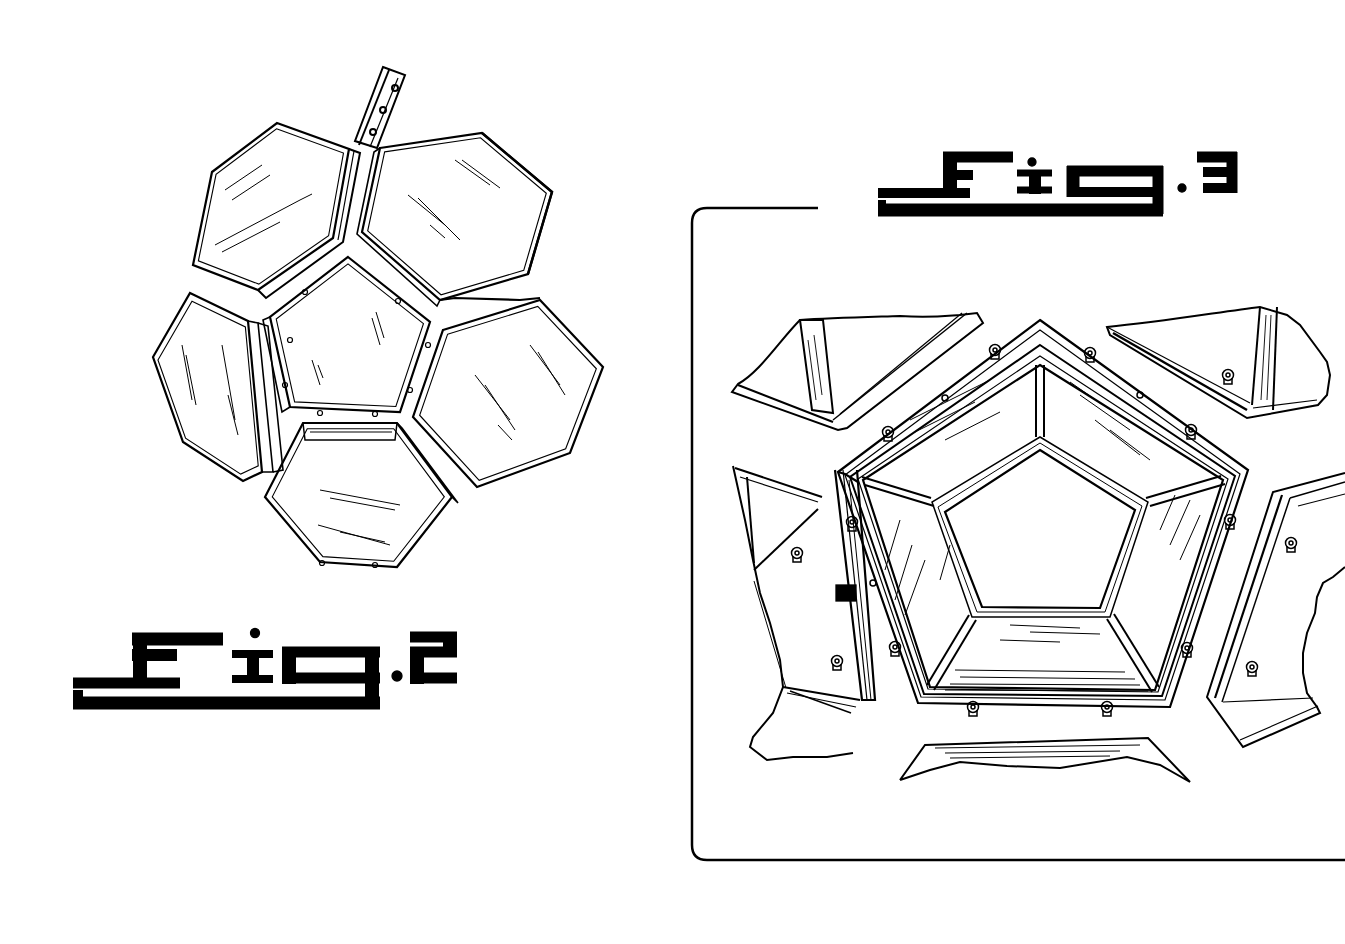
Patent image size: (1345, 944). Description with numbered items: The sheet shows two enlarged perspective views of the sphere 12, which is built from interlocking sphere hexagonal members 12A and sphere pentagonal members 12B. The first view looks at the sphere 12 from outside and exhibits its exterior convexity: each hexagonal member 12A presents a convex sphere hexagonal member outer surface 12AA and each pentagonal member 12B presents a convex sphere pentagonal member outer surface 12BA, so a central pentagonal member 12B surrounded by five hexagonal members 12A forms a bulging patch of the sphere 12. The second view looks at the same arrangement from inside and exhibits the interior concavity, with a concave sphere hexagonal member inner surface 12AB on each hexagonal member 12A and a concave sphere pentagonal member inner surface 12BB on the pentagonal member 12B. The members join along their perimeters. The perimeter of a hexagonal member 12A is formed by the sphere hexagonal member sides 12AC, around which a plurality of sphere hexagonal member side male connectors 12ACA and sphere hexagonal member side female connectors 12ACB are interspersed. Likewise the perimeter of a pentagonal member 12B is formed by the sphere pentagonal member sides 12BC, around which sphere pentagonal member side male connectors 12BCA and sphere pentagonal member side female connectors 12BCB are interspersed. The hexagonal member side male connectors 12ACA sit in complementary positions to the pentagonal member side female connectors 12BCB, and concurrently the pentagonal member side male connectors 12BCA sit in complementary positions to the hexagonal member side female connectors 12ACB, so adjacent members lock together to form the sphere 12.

In FIG. 2, the sphere 12 is at (248, 104).
In FIG. 3, the sphere 12 is at (1057, 287).
In FIG. 2, the sphere hexagonal member 12A is at (497, 140).
In FIG. 3, the sphere hexagonal member 12A is at (747, 582).
In FIG. 2, the sphere hexagonal member outer surface 12AA is at (490, 206).
In FIG. 3, the sphere hexagonal member outer surface 12AA is at (754, 468).
In FIG. 3, the sphere hexagonal member inner surface 12AB is at (800, 660).
In FIG. 2, the sphere hexagonal member sides 12AC is at (543, 175).
In FIG. 3, the sphere hexagonal member sides 12AC is at (866, 700).
In FIG. 3, the sphere hexagonal member side male connector 12ACA is at (843, 700).
In FIG. 3, the sphere hexagonal member side female connector 12ACB is at (836, 595).
In FIG. 2, the sphere pentagonal member 12B is at (258, 308).
In FIG. 3, the sphere pentagonal member 12B is at (1058, 327).
In FIG. 2, the sphere pentagonal member outer surface 12BA is at (385, 349).
In FIG. 3, the sphere pentagonal member outer surface 12BA is at (1239, 454).
In FIG. 3, the sphere pentagonal member inner surface 12BB is at (1075, 540).
In FIG. 2, the sphere pentagonal member sides 12BC is at (517, 298).
In FIG. 3, the sphere pentagonal member sides 12BC is at (833, 472).
In FIG. 3, the sphere pentagonal member side male connector 12BCA is at (973, 712).
In FIG. 3, the sphere pentagonal member side female connector 12BCB is at (1047, 707).